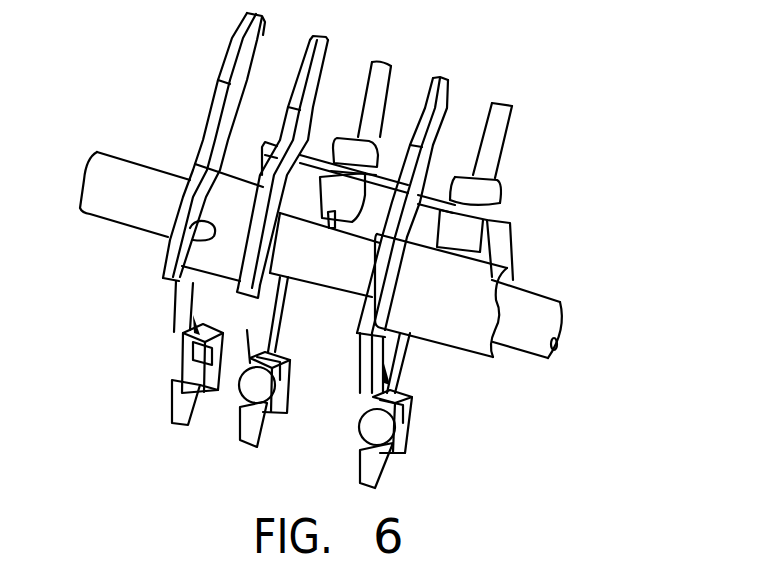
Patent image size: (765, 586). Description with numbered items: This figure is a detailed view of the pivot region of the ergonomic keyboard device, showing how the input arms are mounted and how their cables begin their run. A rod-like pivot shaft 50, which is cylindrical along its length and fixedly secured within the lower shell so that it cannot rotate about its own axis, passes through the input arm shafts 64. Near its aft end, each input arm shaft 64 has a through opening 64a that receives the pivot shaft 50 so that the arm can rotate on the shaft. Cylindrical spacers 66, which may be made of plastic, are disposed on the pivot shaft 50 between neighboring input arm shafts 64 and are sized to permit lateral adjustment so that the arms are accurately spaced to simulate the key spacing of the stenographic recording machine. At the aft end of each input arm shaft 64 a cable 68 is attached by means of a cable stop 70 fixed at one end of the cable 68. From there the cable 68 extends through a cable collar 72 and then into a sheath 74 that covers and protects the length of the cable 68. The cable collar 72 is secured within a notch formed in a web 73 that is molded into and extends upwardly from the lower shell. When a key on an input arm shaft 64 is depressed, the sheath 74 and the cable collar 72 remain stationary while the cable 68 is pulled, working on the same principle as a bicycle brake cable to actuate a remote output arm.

The pivot shaft 50 is at (358, 276).
The input arm shaft 64 is at (317, 72).
The through opening 64a is at (215, 238).
The cylindrical spacer 66 is at (227, 250).
The cable 68 is at (287, 337).
The cable stop 70 is at (253, 385).
The cable collar 72 is at (345, 193).
The web 73 is at (490, 248).
The sheath 74 is at (395, 66).